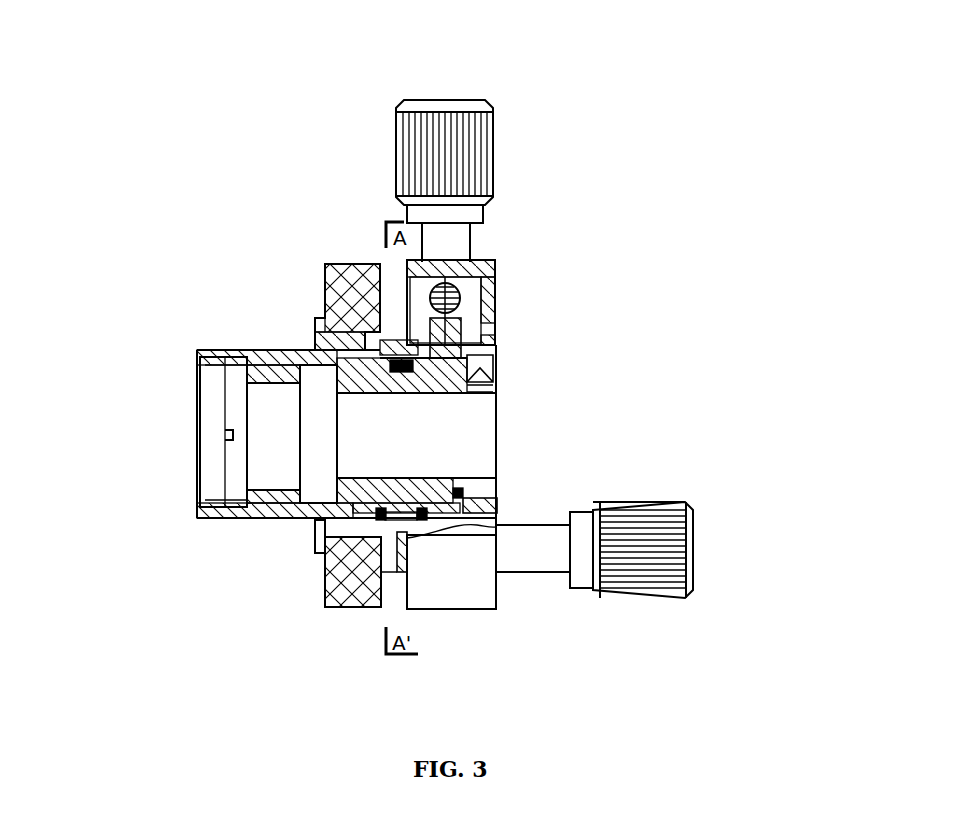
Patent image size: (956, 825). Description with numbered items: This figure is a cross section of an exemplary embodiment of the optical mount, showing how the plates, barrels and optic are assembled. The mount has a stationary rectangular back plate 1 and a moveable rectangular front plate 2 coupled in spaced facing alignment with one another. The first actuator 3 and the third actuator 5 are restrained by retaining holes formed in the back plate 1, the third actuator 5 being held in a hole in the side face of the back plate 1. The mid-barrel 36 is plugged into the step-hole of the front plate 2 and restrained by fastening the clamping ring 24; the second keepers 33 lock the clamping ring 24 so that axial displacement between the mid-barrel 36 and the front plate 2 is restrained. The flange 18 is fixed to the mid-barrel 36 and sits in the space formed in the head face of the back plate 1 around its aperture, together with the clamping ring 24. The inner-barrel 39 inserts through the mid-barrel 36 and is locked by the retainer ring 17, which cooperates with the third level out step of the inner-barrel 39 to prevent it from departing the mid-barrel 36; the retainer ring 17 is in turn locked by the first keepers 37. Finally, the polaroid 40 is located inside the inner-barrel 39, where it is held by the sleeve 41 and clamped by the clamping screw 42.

The rectangular back plate 1 is at (453, 578).
The rectangular front plate 2 is at (352, 572).
The first actuator 3 is at (640, 537).
The third actuator 5 is at (462, 155).
The retainer ring 17 is at (488, 505).
The flange 18 is at (443, 340).
The clamping ring 24 is at (402, 527).
The second keepers 33 is at (376, 345).
The mid-barrel 36 is at (327, 528).
The first keepers 37 is at (498, 383).
The inner-barrel 39 is at (262, 362).
The polaroid 40 is at (317, 462).
The sleeve 41 is at (247, 373).
The clamping screw 42 is at (238, 450).